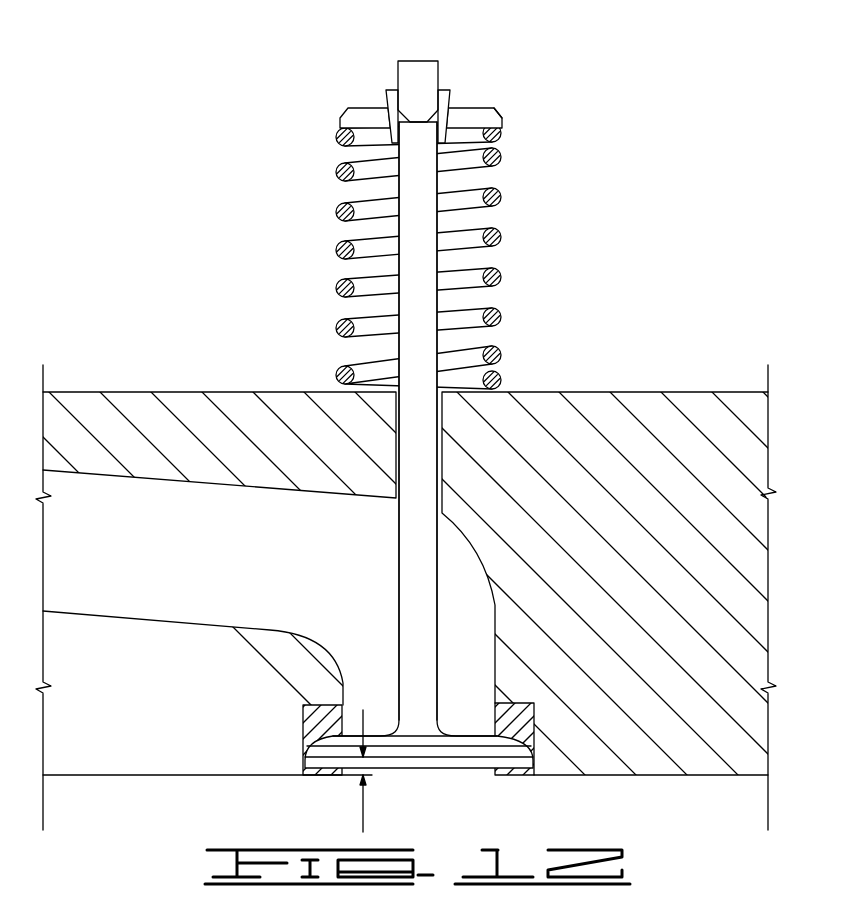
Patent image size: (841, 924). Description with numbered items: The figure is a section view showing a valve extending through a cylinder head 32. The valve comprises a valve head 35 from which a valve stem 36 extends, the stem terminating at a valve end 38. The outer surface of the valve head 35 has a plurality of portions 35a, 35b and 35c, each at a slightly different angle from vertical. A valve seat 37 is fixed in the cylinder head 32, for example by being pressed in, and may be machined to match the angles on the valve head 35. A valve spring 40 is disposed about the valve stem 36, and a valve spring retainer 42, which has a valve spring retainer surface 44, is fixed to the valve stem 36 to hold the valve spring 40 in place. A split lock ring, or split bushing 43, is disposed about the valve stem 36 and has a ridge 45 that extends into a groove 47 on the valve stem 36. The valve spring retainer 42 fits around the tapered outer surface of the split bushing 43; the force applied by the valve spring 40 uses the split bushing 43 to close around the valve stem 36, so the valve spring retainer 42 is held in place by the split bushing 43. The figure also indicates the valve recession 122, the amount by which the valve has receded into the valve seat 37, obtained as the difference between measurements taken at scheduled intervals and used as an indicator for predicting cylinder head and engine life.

The cylinder head 32 is at (662, 392).
The valve head 35 is at (472, 469).
The valve head portion 35a is at (532, 760).
The valve head portion 35b is at (534, 732).
The valve head portion 35c is at (530, 707).
The valve stem 36 is at (398, 562).
The valve seat 37 is at (302, 762).
The valve end 38 is at (414, 66).
The valve spring 40 is at (336, 289).
The valve spring retainer 42 is at (500, 119).
The split bushing 43 is at (391, 97).
The valve spring retainer surface 44 is at (475, 108).
The ridge 45 is at (473, 107).
The groove 47 is at (405, 118).
The valve recession 122 is at (362, 816).